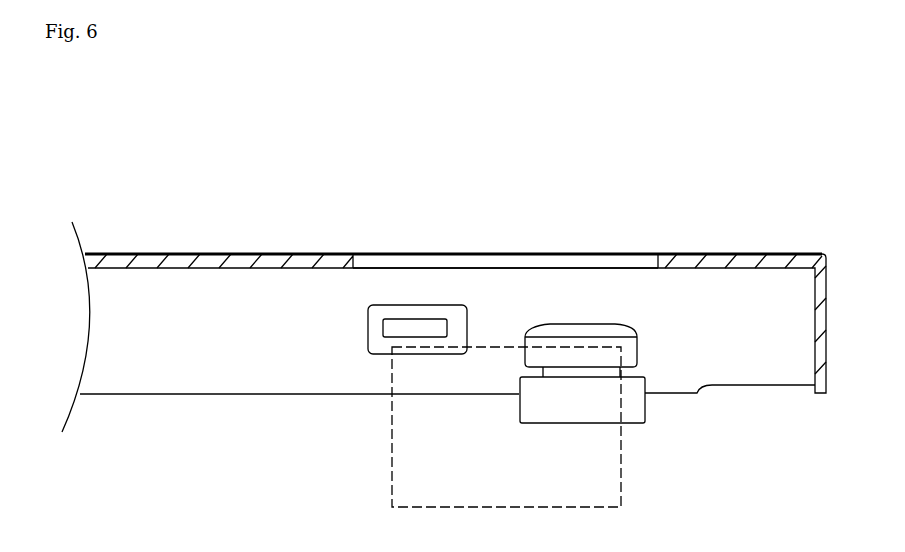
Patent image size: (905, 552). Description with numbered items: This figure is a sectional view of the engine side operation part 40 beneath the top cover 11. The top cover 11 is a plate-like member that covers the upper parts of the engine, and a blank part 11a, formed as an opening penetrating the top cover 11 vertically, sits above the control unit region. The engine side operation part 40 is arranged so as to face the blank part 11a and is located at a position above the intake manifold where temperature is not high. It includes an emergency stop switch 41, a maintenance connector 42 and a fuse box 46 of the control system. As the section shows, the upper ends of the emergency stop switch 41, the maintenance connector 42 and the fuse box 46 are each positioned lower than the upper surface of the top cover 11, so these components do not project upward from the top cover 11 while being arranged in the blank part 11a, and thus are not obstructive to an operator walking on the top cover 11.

The top cover 11 is at (165, 252).
The blank part 11a is at (353, 252).
The engine side operation part 40 is at (580, 113).
The emergency stop switch 41 is at (560, 323).
The maintenance connector 42 is at (418, 306).
The fuse box 46 is at (482, 346).